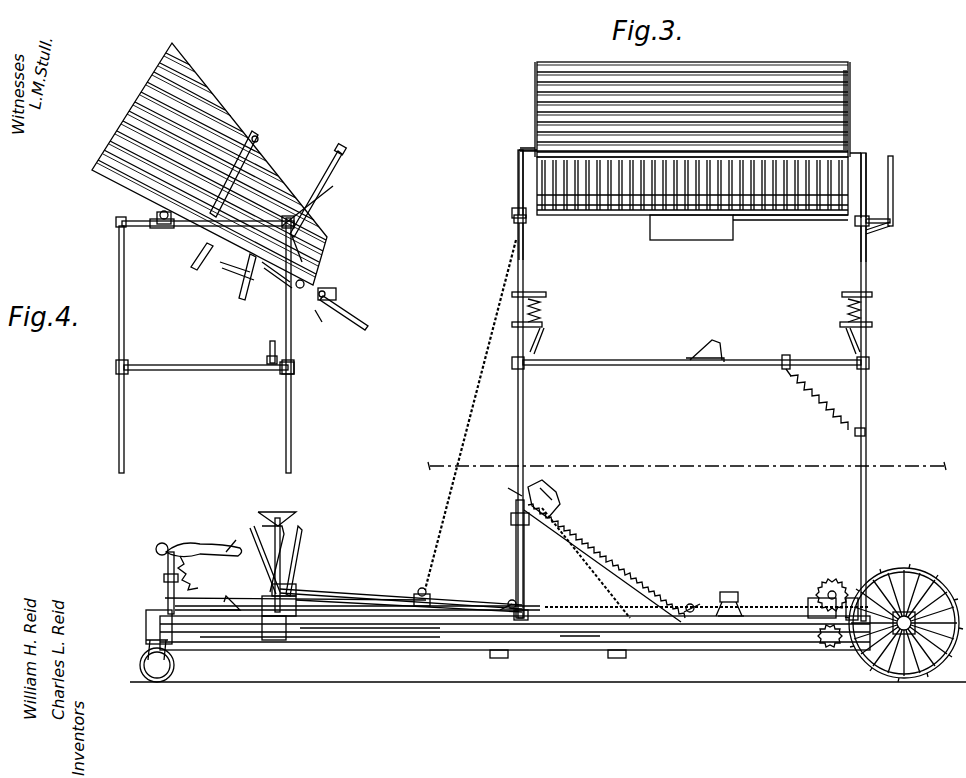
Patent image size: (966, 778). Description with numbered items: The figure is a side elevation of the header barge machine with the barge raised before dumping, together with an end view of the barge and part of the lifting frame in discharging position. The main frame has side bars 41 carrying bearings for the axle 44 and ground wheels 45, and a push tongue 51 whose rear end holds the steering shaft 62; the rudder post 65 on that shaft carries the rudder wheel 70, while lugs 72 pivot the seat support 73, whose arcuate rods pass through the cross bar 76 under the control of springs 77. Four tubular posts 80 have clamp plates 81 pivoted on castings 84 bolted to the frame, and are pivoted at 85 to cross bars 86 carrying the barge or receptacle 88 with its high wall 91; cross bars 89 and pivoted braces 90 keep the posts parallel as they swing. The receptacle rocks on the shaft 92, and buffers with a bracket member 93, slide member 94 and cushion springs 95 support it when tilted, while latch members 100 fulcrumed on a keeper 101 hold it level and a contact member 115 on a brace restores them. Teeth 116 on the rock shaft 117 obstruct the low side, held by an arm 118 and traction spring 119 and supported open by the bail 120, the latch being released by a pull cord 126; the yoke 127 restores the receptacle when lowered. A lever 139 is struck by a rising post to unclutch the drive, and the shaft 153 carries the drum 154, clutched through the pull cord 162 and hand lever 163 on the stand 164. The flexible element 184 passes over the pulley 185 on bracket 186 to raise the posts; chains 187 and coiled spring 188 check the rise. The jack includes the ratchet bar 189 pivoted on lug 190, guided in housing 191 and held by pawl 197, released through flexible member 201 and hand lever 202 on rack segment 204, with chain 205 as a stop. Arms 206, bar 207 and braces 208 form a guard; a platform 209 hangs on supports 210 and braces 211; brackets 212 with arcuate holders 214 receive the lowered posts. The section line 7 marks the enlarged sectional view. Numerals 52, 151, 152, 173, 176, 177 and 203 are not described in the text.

In FIG. 3, the section line 7 is at (685, 466).
In FIG. 3, the side bars 41 is at (580, 640).
In FIG. 3, the axle 44 is at (892, 662).
In FIG. 3, the ground wheels 45 is at (926, 576).
In FIG. 3, the push tongue 51 is at (332, 644).
In FIG. 3, the frame bracket 52 is at (512, 652).
In FIG. 3, the steering shaft 62 is at (168, 580).
In FIG. 3, the rudder post 65 is at (146, 636).
In FIG. 3, the rudder wheel 70 is at (176, 660).
In FIG. 3, the lugs 72 is at (168, 544).
In FIG. 3, the seat support 73 is at (230, 550).
In FIG. 3, the cross bar 76 is at (205, 544).
In FIG. 3, the springs 77 is at (196, 566).
In FIG. 4, the posts 80 is at (126, 316).
In FIG. 3, the posts 80 is at (525, 412).
In FIG. 3, the clamp plates 81 is at (528, 608).
In FIG. 3, the plates or castings 84 is at (540, 615).
In FIG. 4, the pivots 85 is at (128, 228).
In FIG. 4, the cross bars 86 is at (188, 227).
In FIG. 3, the cross bars 86 is at (512, 216).
In FIG. 4, the barge or receptacle 88 is at (238, 140).
In FIG. 3, the barge or receptacle 88 is at (790, 80).
In FIG. 4, the cross bars 89 is at (204, 366).
In FIG. 4, the braces 90 is at (284, 374).
In FIG. 3, the braces 90 is at (650, 360).
In FIG. 4, the high wall 91 is at (150, 98).
In FIG. 3, the high wall 91 is at (758, 62).
In FIG. 4, the rocking bar or shaft 92 is at (157, 214).
In FIG. 3, the rocking bar or shaft 92 is at (512, 208).
In FIG. 3, the bracket member 93 is at (538, 340).
In FIG. 3, the slide member 94 is at (546, 294).
In FIG. 3, the cushion springs 95 is at (543, 312).
In FIG. 4, the latch members 100 is at (240, 272).
In FIG. 4, the keeper 101 is at (262, 275).
In FIG. 4, the contact member 115 is at (271, 350).
In FIG. 3, the contact member 115 is at (722, 344).
In FIG. 4, the teeth 116 is at (355, 310).
In FIG. 3, the teeth 116 is at (644, 212).
In FIG. 4, the rock shaft 117 is at (316, 312).
In FIG. 3, the rock shaft 117 is at (612, 212).
In FIG. 4, the arm 118 is at (338, 294).
In FIG. 4, the traction spring 119 is at (318, 270).
In FIG. 3, the bail or bracket 120 is at (766, 220).
In FIG. 3, the pull cord 126 is at (828, 648).
In FIG. 3, the elongated yoke 127 is at (694, 240).
In FIG. 3, the lever 139 is at (852, 598).
In FIG. 3, the ground rail 151 is at (246, 644).
In FIG. 3, the foot lever 152 is at (226, 600).
In FIG. 3, the shaft 153 is at (820, 584).
In FIG. 3, the drum 154 is at (831, 580).
In FIG. 3, the flexible element or pull cord 162 is at (480, 596).
In FIG. 3, the hand lever 163 is at (258, 556).
In FIG. 3, the stand 164 is at (272, 642).
In FIG. 3, the frame member 173 is at (366, 644).
In FIG. 3, the hand lever 176 is at (268, 540).
In FIG. 3, the lever handle 177 is at (270, 516).
In FIG. 3, the flexible element 184 is at (476, 372).
In FIG. 3, the pulley 185 is at (420, 590).
In FIG. 3, the bracket 186 is at (398, 600).
In FIG. 3, the chains 187 is at (786, 374).
In FIG. 3, the coiled spring 188 is at (818, 400).
In FIG. 3, the ratchet bar 189 is at (622, 568).
In FIG. 3, the lug 190 is at (692, 604).
In FIG. 3, the housing 191 is at (511, 518).
In FIG. 3, the pawl 197 is at (552, 506).
In FIG. 3, the flexible member 201 is at (516, 562).
In FIG. 3, the hand lever 202 is at (300, 536).
In FIG. 3, the lever fulcrum 203 is at (296, 582).
In FIG. 3, the rack segment 204 is at (300, 588).
In FIG. 3, the chain 205 is at (522, 598).
In FIG. 4, the arms or brackets 206 is at (330, 178).
In FIG. 3, the arms or brackets 206 is at (516, 172).
In FIG. 4, the bar 207 is at (348, 152).
In FIG. 3, the bar 207 is at (575, 150).
In FIG. 4, the braces 208 is at (295, 205).
In FIG. 3, the braces 208 is at (515, 240).
In FIG. 3, the platform 209 is at (894, 187).
In FIG. 3, the supports 210 is at (894, 220).
In FIG. 3, the braces 211 is at (880, 238).
In FIG. 3, the brackets 212 is at (728, 590).
In FIG. 3, the arcuate holder 214 is at (722, 604).